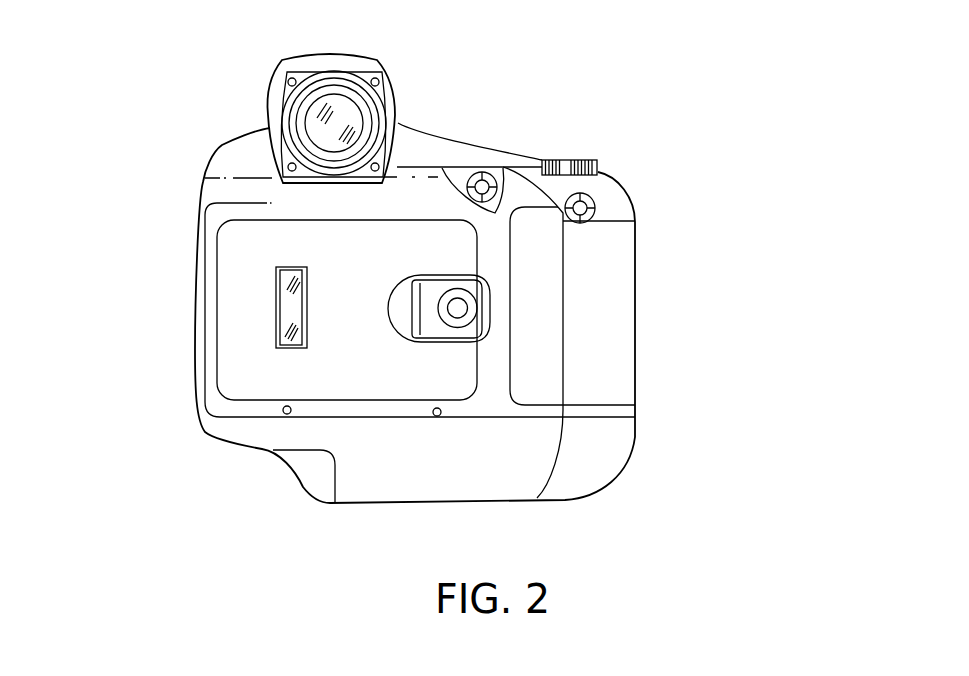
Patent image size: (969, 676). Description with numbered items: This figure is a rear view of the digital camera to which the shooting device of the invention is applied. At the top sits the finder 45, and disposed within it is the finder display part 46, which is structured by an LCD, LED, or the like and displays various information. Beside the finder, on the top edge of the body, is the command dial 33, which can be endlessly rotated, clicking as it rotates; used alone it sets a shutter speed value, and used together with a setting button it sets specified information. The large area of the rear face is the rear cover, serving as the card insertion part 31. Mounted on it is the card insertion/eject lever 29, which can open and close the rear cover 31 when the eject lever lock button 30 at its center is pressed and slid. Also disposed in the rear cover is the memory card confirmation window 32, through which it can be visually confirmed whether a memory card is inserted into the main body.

The card insertion/eject lever 29 is at (477, 328).
The eject lever lock button 30 is at (458, 309).
The rear cover (card insertion part) 31 is at (328, 380).
The memory card confirmation window 32 is at (290, 307).
The command dial 33 is at (598, 168).
The finder 45 is at (297, 97).
The finder display part 46 is at (347, 113).